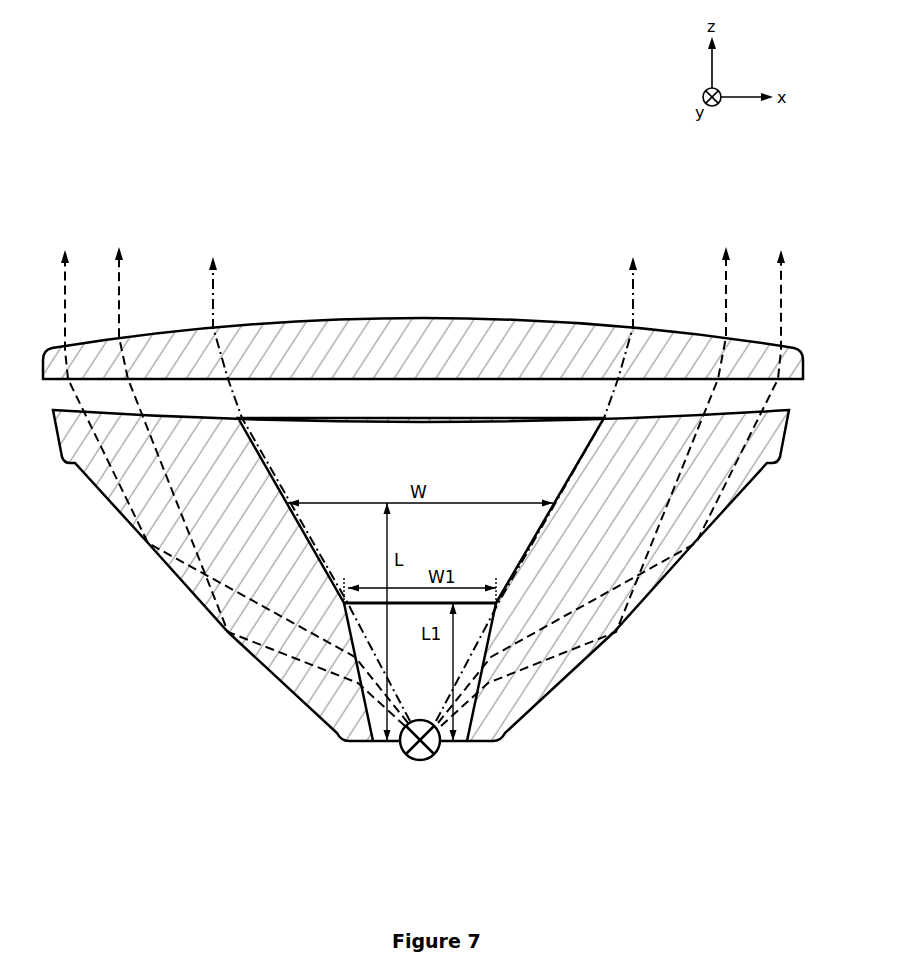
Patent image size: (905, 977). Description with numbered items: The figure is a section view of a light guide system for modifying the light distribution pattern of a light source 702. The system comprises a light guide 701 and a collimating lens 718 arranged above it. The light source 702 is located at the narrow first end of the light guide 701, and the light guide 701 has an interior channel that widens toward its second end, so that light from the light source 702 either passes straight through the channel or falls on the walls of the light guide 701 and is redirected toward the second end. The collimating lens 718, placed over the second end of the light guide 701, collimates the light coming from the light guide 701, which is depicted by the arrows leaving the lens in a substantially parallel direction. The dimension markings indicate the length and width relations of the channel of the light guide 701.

The collimating lens 718 is at (402, 318).
The light guide 701 is at (193, 598).
The light source 702 is at (422, 760).